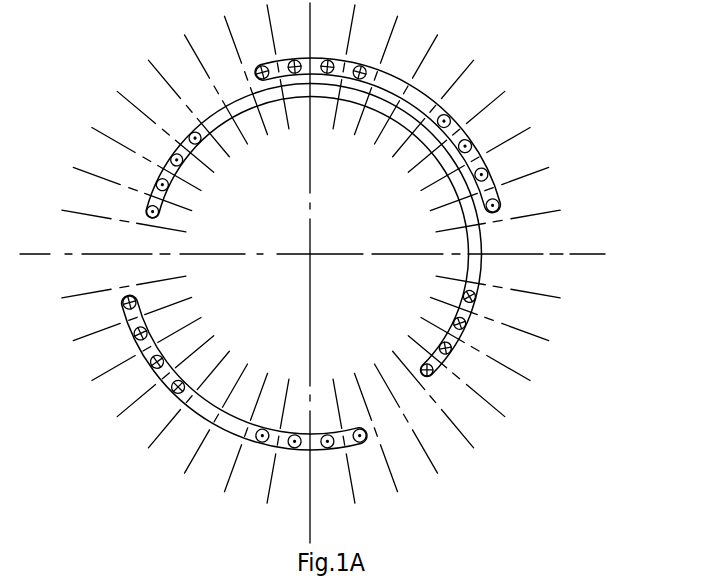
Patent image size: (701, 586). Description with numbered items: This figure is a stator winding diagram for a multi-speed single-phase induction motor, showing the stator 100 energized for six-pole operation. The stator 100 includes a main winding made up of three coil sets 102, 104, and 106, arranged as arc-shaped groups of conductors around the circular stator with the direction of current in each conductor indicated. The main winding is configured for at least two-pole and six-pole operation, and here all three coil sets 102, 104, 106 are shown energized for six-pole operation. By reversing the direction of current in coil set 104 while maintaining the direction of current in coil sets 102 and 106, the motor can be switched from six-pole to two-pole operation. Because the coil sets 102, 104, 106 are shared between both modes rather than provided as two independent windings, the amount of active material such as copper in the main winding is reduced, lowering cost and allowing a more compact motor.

The stator 100 is at (104, 104).
The coil set 102 is at (417, 90).
The coil set 104 is at (436, 275).
The coil set 106 is at (198, 412).